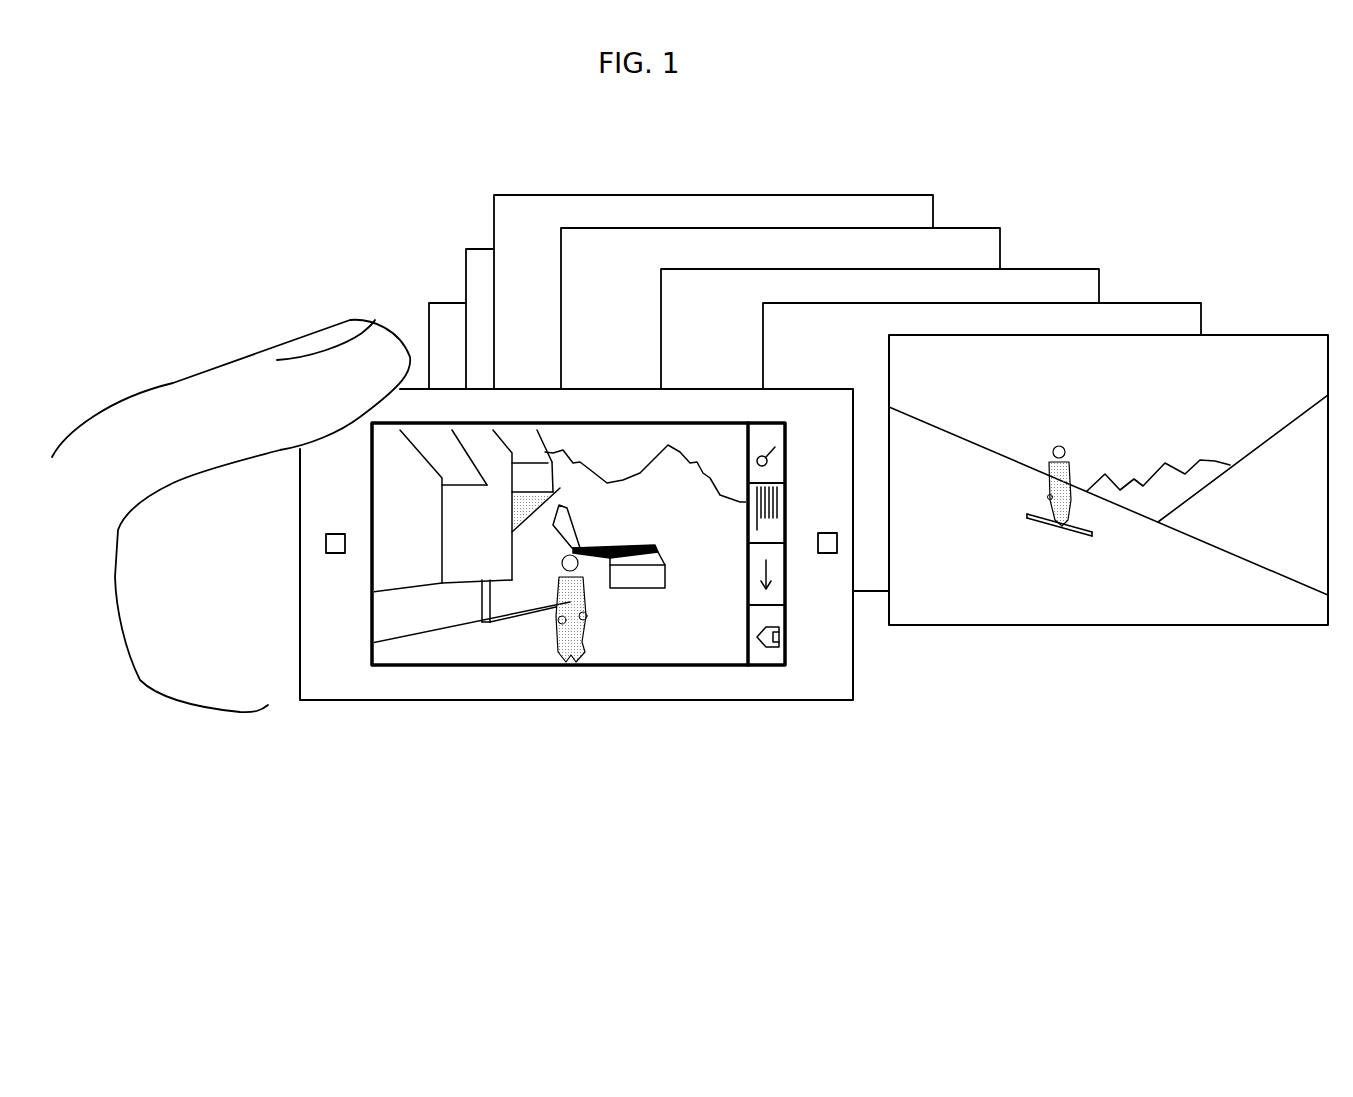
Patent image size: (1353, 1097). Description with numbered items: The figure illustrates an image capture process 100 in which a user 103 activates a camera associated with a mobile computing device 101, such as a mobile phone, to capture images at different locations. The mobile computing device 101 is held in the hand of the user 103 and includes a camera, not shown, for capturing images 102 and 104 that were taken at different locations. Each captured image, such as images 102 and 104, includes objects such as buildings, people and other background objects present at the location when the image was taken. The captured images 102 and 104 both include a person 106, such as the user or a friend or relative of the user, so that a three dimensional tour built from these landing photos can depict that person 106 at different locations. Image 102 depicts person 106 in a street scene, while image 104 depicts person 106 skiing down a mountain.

The image capture process 100 is at (1278, 71).
The mobile computing device 101 is at (733, 702).
The image 102 is at (467, 665).
The user 103 is at (115, 575).
The image 104 is at (1155, 628).
The person 106 is at (590, 585).